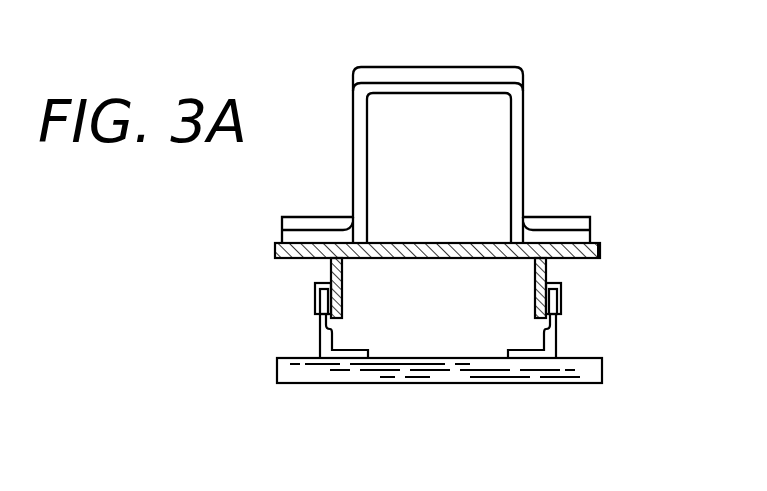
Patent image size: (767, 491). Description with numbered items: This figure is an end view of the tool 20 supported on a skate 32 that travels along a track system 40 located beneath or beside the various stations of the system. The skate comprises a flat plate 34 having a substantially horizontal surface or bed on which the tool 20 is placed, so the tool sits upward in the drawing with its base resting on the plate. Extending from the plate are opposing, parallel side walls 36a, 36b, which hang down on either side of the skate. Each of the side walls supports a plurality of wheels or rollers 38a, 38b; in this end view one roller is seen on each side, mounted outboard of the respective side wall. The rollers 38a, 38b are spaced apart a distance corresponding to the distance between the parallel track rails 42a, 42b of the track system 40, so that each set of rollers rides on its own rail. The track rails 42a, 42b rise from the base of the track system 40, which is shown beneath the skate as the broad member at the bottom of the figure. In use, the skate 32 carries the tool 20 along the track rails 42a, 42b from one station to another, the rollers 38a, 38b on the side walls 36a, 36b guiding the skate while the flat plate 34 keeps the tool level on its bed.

The tool 20 is at (459, 157).
The skate 32 is at (463, 243).
The flat plate 34 is at (603, 243).
The side wall 36a is at (547, 265).
The side wall 36b is at (323, 268).
The wheels or rollers 38a is at (558, 305).
The wheels or rollers 38b is at (317, 293).
The track rail 42a is at (557, 338).
The track rail 42b is at (320, 333).
The track system 40 is at (532, 382).